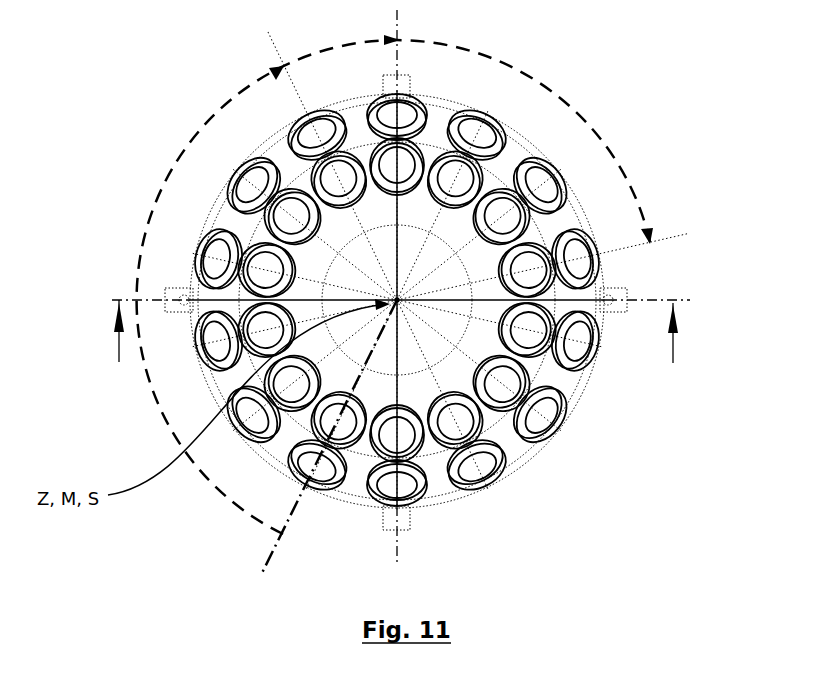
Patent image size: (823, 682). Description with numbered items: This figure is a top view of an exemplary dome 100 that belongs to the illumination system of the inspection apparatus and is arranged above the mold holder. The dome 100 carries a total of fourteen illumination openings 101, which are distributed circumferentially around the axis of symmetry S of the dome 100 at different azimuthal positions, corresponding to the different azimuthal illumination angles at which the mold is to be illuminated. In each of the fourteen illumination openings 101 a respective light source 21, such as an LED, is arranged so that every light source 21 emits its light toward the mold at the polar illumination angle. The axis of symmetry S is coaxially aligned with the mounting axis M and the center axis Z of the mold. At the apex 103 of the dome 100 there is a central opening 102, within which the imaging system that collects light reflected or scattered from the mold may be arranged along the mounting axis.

The dome 100 is at (500, 491).
The illumination openings 101 is at (280, 223).
The central opening 102 is at (417, 272).
The apex 103 is at (407, 296).
The light sources 21 is at (540, 340).